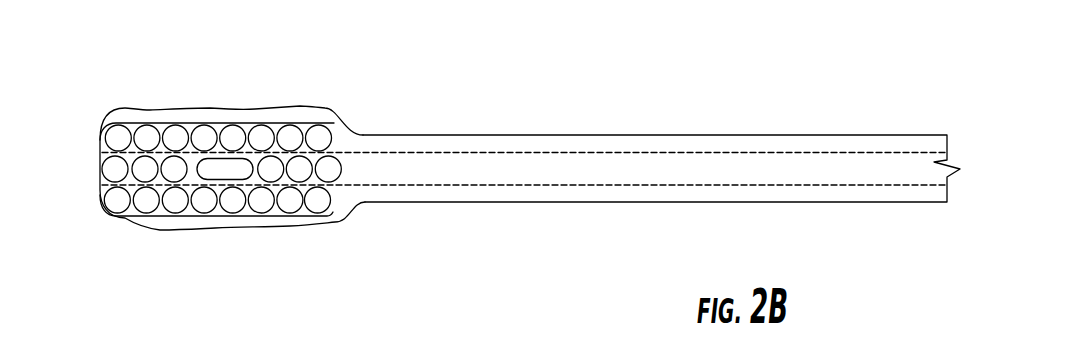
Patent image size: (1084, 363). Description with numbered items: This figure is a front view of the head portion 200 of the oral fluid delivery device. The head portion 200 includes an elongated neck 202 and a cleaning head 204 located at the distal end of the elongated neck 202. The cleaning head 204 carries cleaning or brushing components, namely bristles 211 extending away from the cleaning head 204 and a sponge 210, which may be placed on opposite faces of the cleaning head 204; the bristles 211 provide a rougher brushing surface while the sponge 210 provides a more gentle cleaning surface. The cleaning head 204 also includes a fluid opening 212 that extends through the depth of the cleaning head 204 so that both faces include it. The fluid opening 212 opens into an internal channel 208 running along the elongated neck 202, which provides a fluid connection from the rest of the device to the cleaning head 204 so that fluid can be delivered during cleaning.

The head portion 200 is at (823, 72).
The elongated neck 202 is at (453, 152).
The cleaning head 204 is at (102, 193).
The internal channel 208 is at (915, 168).
The sponge 210 is at (270, 228).
The bristles 211 is at (320, 137).
The fluid opening 212 is at (222, 167).